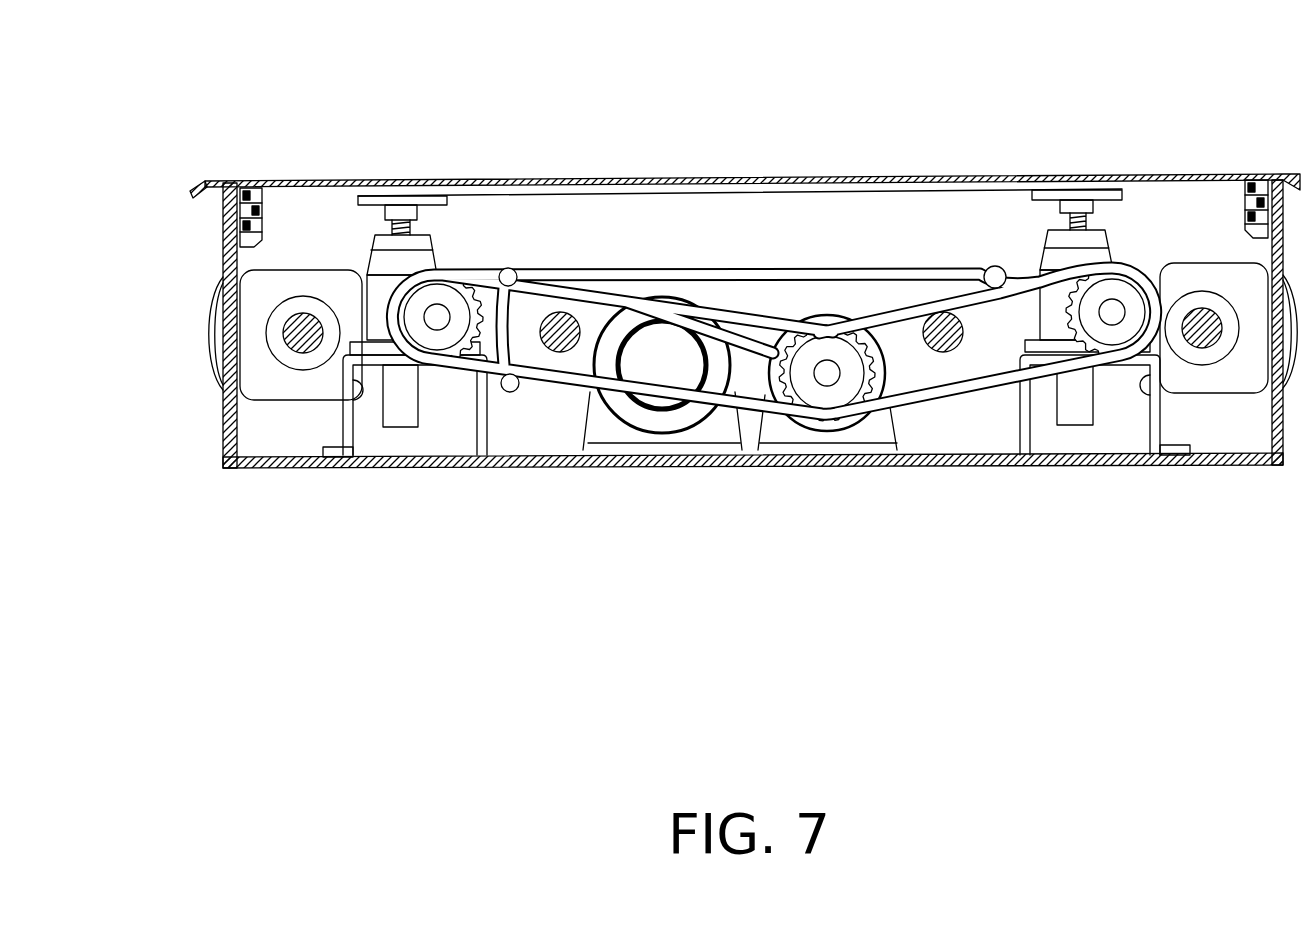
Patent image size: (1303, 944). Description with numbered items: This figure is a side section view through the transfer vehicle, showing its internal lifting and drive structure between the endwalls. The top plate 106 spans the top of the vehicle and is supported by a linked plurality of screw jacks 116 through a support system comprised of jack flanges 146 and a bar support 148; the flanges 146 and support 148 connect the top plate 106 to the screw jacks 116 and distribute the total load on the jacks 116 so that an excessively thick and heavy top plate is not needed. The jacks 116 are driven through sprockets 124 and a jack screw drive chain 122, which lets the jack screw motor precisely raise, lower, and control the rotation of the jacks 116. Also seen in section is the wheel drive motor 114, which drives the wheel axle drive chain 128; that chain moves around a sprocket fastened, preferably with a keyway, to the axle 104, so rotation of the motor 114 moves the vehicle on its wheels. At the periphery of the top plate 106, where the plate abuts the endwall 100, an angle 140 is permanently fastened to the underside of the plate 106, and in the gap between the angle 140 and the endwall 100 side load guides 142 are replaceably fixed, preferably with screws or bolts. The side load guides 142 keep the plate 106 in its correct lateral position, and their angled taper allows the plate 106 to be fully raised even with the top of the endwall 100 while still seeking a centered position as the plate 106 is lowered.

The endwall 100 is at (225, 245).
The axle 104 is at (300, 345).
The top plate 106 is at (390, 188).
The wheel drive motor 114 is at (665, 353).
The screw jacks 116 is at (1053, 260).
The jack screw drive chain 122 is at (470, 358).
The sprockets 124 is at (843, 390).
The wheel axle drive chain 128 is at (752, 272).
The angle 140 is at (263, 220).
The side load guides 142 is at (250, 185).
The jack flanges 146 is at (440, 198).
The bar support 148 is at (638, 190).